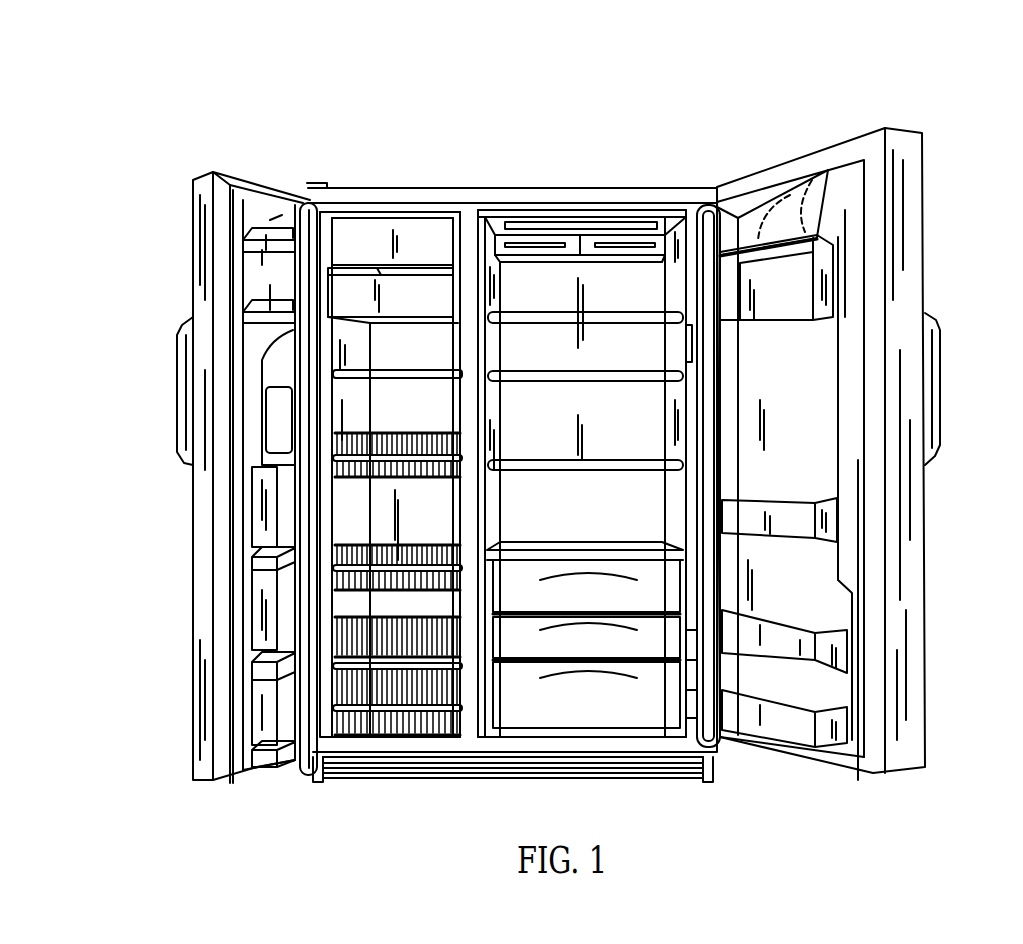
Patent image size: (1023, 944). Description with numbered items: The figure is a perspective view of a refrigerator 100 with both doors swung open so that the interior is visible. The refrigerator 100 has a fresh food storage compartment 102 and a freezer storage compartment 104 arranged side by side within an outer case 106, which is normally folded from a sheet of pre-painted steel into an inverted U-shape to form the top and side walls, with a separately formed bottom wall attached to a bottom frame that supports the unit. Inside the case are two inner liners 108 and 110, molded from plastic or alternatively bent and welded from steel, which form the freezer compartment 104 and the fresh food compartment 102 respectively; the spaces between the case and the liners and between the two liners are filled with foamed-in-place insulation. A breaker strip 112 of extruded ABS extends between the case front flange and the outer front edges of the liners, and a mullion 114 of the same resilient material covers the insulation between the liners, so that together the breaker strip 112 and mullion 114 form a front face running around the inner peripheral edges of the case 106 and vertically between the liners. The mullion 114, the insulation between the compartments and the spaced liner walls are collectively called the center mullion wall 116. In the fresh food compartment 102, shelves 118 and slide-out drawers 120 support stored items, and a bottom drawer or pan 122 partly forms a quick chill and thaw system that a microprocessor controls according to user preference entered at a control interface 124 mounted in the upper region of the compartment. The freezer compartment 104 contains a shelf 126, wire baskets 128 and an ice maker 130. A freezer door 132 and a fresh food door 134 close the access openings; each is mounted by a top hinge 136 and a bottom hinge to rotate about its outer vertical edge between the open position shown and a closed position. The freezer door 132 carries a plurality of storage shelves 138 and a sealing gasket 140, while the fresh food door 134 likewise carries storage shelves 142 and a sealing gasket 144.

The refrigerator 100 is at (516, 70).
The fresh food storage compartment 102 is at (676, 213).
The freezer storage compartment 104 is at (431, 248).
The outer case 106 is at (547, 183).
The inner liner 108 is at (590, 218).
The inner liner 110 is at (370, 212).
The breaker strip 112 is at (652, 198).
The mullion 114 is at (466, 434).
The center mullion wall 116 is at (498, 391).
The shelves 118 is at (606, 380).
The slide-out drawers 120 is at (605, 608).
The bottom drawer or pan 122 is at (605, 714).
The control interface 124 is at (530, 224).
The shelf 126 is at (390, 378).
The wire baskets 128 is at (336, 440).
The ice maker 130 is at (398, 310).
The freezer door 132 is at (191, 210).
The fresh food door 134 is at (940, 208).
The top hinge 136 is at (316, 190).
The storage shelves 138 is at (262, 757).
The sealing gasket 140 is at (230, 180).
The storage shelves 142 is at (758, 505).
The sealing gasket 144 is at (828, 166).